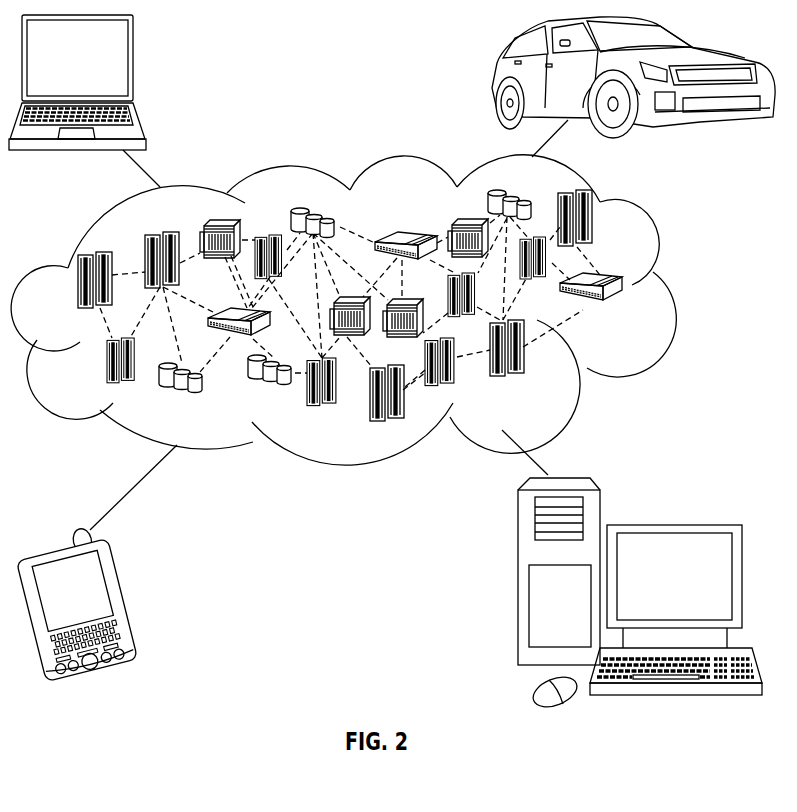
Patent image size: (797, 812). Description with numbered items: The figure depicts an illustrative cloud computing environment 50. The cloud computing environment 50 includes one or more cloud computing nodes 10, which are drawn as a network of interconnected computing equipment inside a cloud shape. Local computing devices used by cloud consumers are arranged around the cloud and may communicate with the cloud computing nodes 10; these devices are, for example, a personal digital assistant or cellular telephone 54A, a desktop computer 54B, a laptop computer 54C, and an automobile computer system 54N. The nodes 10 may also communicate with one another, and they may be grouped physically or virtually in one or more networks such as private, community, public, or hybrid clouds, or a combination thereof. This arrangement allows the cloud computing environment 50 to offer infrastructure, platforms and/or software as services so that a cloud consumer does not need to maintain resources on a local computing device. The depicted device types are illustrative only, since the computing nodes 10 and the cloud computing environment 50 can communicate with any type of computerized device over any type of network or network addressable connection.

The laptop computer 54C is at (134, 63).
The automobile computer system 54N is at (493, 78).
The cloud computing environment 50 is at (369, 310).
The cloud computing node 10 is at (627, 313).
The personal digital assistant or cellular telephone 54A is at (125, 604).
The desktop computer 54B is at (672, 524).